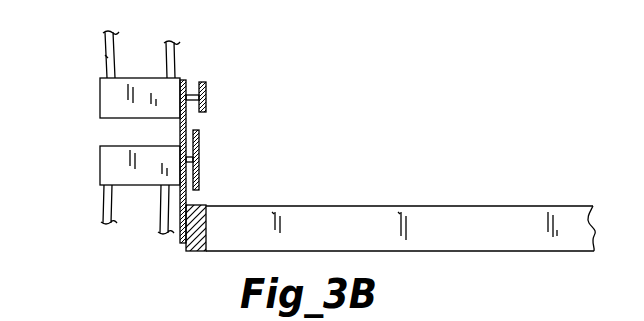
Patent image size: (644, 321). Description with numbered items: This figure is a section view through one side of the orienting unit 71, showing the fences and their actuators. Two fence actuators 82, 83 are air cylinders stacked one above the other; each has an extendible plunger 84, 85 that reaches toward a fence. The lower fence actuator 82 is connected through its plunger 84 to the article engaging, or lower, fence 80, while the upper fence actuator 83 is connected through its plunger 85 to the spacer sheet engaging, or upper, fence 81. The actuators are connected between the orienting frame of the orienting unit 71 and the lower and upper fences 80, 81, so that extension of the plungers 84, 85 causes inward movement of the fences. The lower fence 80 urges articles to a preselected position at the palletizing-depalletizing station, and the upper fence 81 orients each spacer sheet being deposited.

The orienting unit 71 is at (285, 170).
The lower fence 80 is at (198, 183).
The upper fence 81 is at (207, 92).
The fence actuator 82 is at (118, 158).
The fence actuator 83 is at (118, 104).
The extendible plunger 84 is at (197, 141).
The extendible plunger 85 is at (190, 93).